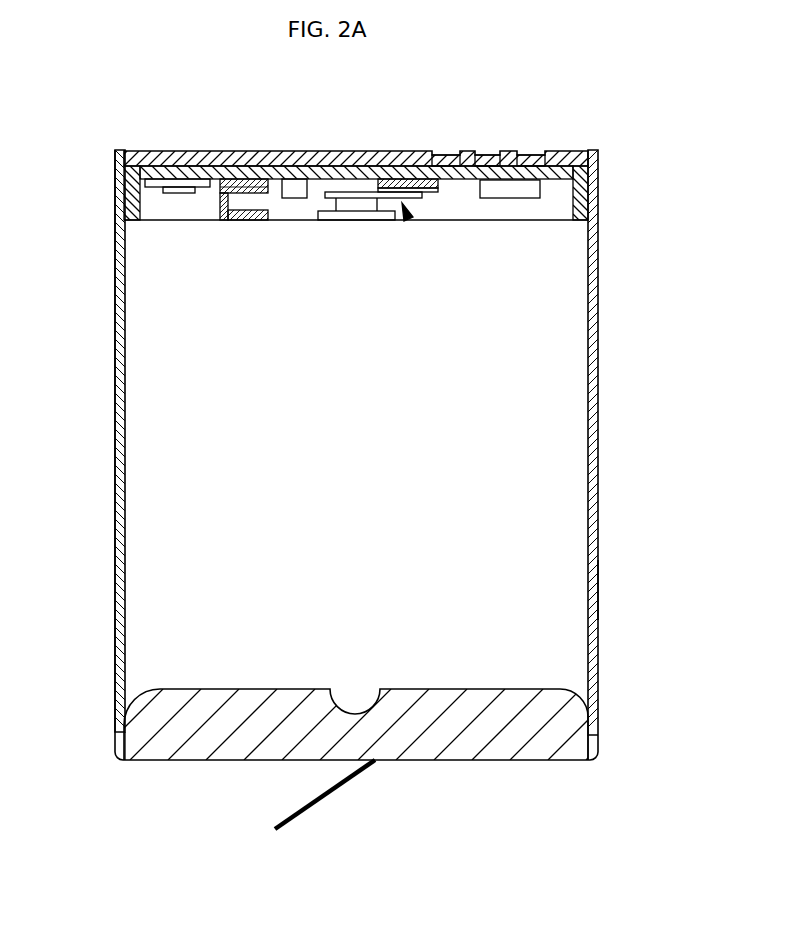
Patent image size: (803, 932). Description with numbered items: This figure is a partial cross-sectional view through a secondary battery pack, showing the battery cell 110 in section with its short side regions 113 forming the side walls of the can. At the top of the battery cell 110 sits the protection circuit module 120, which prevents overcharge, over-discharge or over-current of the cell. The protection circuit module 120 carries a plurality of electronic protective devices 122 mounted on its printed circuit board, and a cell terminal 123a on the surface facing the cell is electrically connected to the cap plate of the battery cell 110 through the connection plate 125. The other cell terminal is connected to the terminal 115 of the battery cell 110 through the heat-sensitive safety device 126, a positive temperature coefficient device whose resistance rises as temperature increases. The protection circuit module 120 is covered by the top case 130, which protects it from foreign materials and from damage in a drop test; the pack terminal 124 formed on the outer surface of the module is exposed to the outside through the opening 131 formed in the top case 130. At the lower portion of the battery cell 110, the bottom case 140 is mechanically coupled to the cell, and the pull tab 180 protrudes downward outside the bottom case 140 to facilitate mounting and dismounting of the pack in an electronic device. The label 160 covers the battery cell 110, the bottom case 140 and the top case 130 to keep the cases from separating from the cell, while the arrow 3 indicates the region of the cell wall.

The battery cell 110 is at (563, 422).
The short side region 113 is at (118, 518).
The label 160 is at (595, 580).
The section direction 3 is at (603, 708).
The bottom case 140 is at (483, 728).
The pull tab 180 is at (310, 808).
The top case 130 is at (220, 152).
The protection circuit module 120 is at (277, 159).
The pack terminal 124 is at (490, 153).
The opening 131 is at (532, 152).
The connection plate 125 is at (236, 221).
The cell terminal 123a is at (271, 182).
The terminal 115 is at (348, 203).
The heat-sensitive safety device 126 is at (408, 222).
The electronic protective device 122 is at (528, 197).